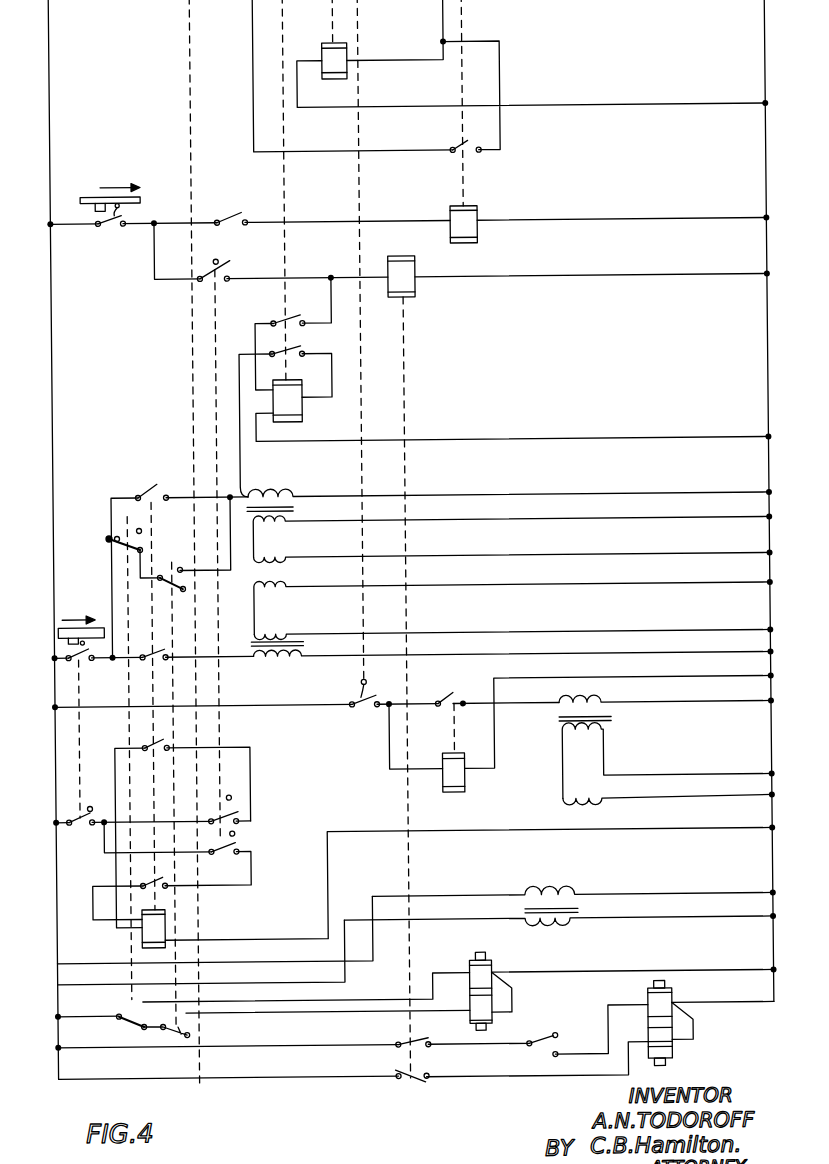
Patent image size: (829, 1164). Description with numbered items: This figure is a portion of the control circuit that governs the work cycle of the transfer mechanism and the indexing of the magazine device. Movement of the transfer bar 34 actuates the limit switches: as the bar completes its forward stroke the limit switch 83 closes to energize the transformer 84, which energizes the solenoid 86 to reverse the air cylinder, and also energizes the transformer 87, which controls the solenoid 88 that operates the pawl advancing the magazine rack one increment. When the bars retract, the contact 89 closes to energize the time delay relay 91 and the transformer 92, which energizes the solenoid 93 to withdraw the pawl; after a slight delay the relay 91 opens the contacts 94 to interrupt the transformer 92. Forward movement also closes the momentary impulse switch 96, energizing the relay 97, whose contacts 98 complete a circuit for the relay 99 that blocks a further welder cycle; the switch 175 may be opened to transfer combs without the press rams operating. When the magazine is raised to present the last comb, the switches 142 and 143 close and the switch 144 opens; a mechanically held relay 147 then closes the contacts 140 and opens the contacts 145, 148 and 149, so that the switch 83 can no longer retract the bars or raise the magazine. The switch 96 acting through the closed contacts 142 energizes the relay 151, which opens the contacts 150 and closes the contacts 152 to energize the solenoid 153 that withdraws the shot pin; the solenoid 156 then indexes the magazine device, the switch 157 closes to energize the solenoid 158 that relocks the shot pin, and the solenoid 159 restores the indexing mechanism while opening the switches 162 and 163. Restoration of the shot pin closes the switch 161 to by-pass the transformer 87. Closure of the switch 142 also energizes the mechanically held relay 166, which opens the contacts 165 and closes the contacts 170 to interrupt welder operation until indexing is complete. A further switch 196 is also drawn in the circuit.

The transfer bar 34 is at (91, 194).
The momentary impulse switch 96 is at (116, 219).
The switch 175 is at (228, 217).
The switch 142 is at (235, 259).
The contacts 98 is at (472, 141).
The relay 99 is at (350, 74).
The relay 97 is at (480, 232).
The relay 151 is at (416, 290).
The contacts 165 is at (278, 318).
The contacts 170 is at (306, 345).
The tapped coil mechanically held relay 166 is at (304, 408).
The transformer 87 is at (296, 500).
The solenoid 88 is at (286, 556).
The solenoid 86 is at (284, 587).
The transformer 84 is at (302, 655).
The contacts 149 is at (153, 479).
The switch 161 is at (117, 536).
The switch 162 is at (172, 574).
The limit switch 83 is at (84, 650).
The contacts 148 is at (165, 656).
The contact 89 is at (358, 708).
The contacts 94 is at (458, 686).
The time delay relay 91 is at (463, 782).
The transformer 92 is at (560, 724).
The solenoid 93 is at (561, 800).
The contacts 145 is at (141, 745).
The switch 196 is at (85, 826).
The switch 143 is at (236, 810).
The switch 144 is at (233, 841).
The contacts 140 is at (160, 875).
The mechanically held relay 147 is at (150, 932).
The solenoid 156 is at (475, 972).
The solenoid 159 is at (124, 1018).
The switch 163 is at (184, 1031).
The contacts 150 is at (393, 1041).
The switch 157 is at (552, 1034).
The solenoid 158 is at (656, 1002).
The solenoid 153 is at (668, 1050).
The contacts 152 is at (398, 1090).